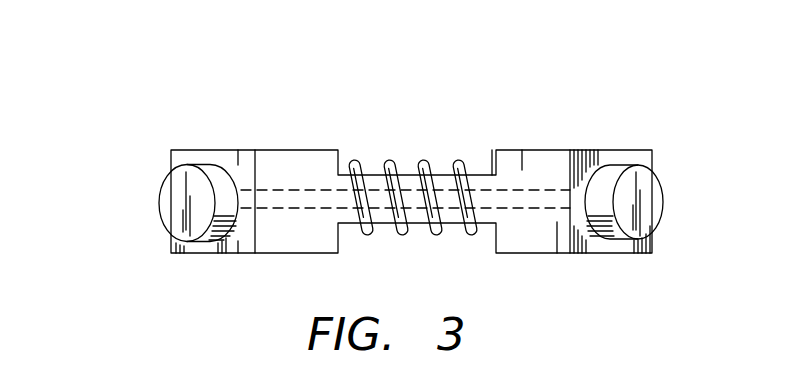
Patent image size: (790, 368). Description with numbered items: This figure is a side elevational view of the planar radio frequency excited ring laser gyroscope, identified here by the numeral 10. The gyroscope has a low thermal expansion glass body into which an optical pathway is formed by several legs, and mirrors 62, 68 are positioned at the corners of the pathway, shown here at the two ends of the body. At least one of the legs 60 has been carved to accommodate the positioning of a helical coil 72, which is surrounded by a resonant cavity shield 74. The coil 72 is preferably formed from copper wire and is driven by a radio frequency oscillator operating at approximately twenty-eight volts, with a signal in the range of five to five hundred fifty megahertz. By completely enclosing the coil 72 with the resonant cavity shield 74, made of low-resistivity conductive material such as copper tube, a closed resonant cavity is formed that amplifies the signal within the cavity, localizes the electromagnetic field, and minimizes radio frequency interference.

The connector assembly 10 is at (533, 72).
The leg 60 is at (548, 188).
The mirror 62 is at (167, 208).
The mirror 68 is at (648, 189).
The helical coil 72 is at (466, 160).
The resonant cavity shield 74 is at (368, 148).